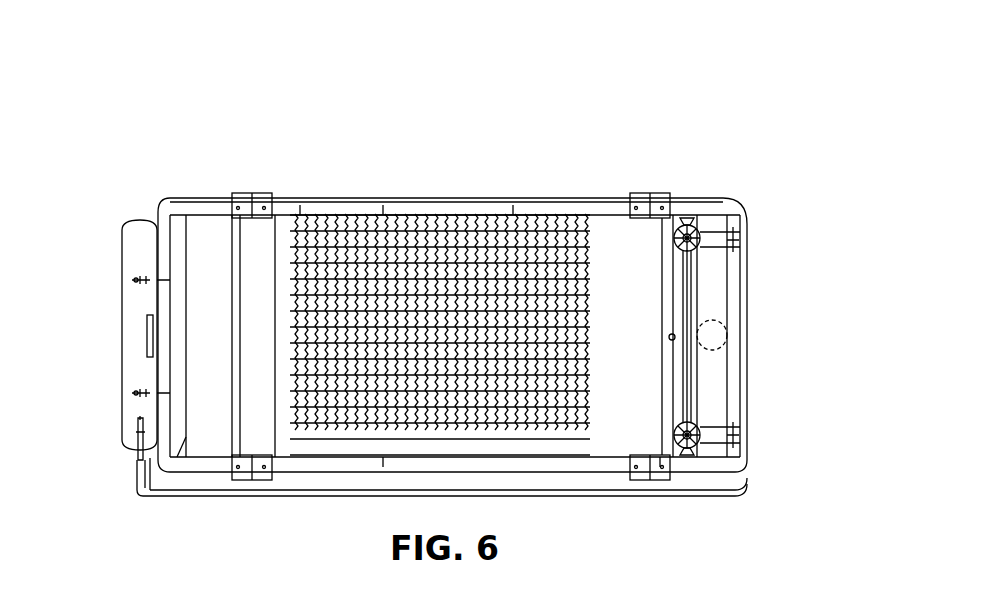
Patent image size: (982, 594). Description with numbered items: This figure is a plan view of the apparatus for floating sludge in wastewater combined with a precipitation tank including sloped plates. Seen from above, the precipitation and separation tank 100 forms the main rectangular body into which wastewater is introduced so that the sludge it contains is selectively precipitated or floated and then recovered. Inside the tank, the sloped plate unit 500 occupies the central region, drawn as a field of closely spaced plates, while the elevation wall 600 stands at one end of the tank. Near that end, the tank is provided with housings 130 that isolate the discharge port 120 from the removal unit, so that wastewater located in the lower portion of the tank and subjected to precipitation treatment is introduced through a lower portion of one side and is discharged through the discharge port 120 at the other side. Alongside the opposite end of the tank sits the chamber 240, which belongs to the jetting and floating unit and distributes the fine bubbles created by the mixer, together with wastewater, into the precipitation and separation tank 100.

The precipitation and separation tank 100 is at (208, 228).
The sloped plate unit 500 is at (600, 246).
The elevation wall 600 is at (698, 212).
The housings 130 is at (720, 245).
The discharge port 120 is at (727, 320).
The chamber 240 is at (133, 250).